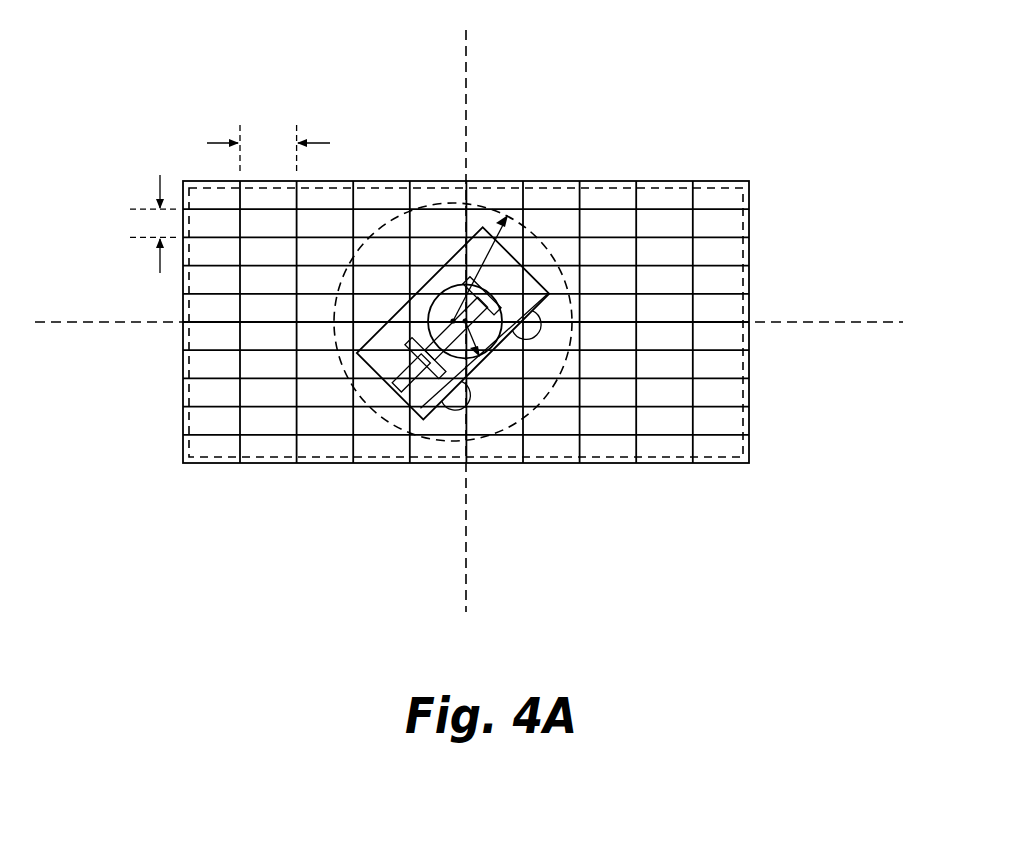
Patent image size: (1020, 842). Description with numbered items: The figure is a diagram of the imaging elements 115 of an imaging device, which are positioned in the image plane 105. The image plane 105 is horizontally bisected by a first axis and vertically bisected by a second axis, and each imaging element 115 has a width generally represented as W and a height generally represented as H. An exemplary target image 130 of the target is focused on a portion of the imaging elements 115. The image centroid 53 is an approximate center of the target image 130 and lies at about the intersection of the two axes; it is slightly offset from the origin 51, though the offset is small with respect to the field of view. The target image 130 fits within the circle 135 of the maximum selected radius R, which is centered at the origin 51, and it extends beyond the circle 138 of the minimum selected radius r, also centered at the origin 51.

The image plane 105 is at (575, 580).
The imaging elements 115 is at (701, 446).
The target image 130 is at (366, 362).
The circle of the maximum selected radius R 135 is at (481, 207).
The circle of the minimum selected radius r 138 is at (503, 308).
The origin 51 is at (432, 348).
The image centroid 53 is at (453, 321).